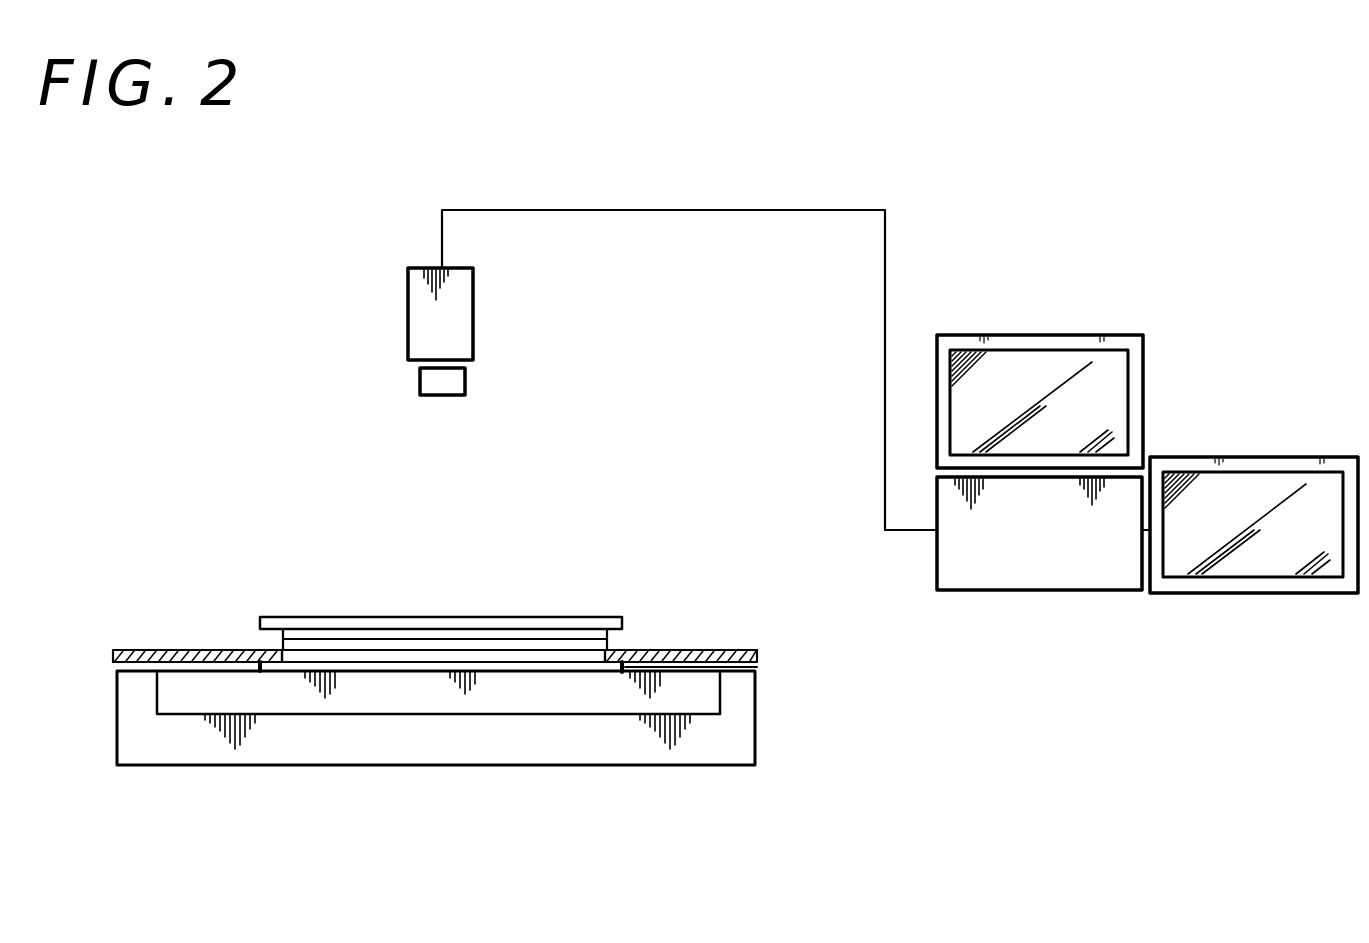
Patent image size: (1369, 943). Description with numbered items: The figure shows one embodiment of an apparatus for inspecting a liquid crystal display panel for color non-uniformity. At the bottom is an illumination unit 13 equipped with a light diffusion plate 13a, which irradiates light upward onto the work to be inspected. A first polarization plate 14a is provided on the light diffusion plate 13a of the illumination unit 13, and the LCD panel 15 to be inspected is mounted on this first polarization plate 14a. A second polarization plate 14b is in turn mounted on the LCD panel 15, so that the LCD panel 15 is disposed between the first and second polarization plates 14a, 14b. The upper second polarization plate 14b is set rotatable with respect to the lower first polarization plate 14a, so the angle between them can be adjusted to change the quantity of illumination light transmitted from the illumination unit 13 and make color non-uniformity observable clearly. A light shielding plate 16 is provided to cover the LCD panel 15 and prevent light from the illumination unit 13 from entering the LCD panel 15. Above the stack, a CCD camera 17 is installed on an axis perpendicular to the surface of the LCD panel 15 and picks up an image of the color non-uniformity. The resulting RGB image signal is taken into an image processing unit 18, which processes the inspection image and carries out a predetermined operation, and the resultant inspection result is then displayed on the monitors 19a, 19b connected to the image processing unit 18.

The illumination unit 13 is at (442, 752).
The light diffusion plate 13a is at (562, 702).
The first polarization plate 14a is at (570, 658).
The second polarization plate 14b is at (320, 630).
The LCD panel 15 is at (452, 645).
The light shielding plate 16 is at (168, 648).
The CCD camera 17 is at (474, 313).
The image processing unit 18 is at (1047, 593).
The monitor 19a is at (1035, 335).
The monitor 19b is at (1243, 595).